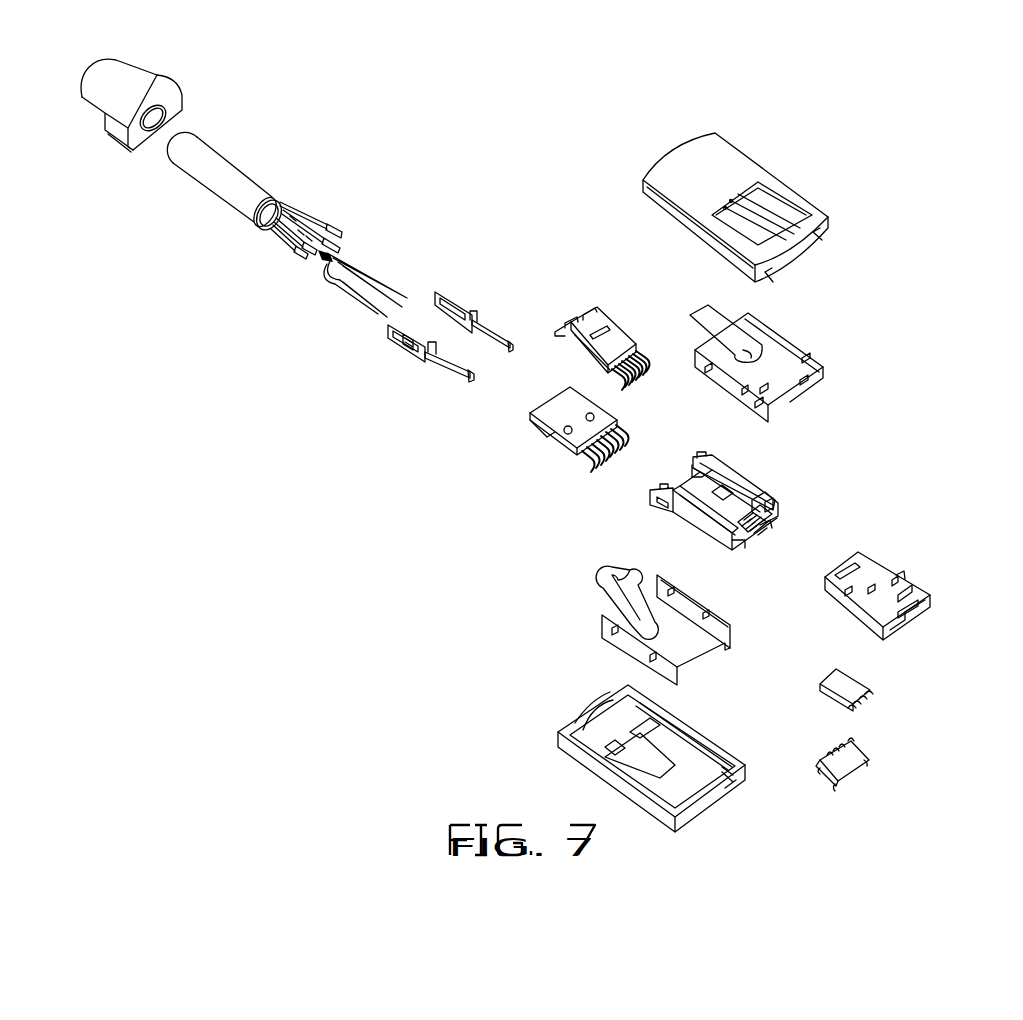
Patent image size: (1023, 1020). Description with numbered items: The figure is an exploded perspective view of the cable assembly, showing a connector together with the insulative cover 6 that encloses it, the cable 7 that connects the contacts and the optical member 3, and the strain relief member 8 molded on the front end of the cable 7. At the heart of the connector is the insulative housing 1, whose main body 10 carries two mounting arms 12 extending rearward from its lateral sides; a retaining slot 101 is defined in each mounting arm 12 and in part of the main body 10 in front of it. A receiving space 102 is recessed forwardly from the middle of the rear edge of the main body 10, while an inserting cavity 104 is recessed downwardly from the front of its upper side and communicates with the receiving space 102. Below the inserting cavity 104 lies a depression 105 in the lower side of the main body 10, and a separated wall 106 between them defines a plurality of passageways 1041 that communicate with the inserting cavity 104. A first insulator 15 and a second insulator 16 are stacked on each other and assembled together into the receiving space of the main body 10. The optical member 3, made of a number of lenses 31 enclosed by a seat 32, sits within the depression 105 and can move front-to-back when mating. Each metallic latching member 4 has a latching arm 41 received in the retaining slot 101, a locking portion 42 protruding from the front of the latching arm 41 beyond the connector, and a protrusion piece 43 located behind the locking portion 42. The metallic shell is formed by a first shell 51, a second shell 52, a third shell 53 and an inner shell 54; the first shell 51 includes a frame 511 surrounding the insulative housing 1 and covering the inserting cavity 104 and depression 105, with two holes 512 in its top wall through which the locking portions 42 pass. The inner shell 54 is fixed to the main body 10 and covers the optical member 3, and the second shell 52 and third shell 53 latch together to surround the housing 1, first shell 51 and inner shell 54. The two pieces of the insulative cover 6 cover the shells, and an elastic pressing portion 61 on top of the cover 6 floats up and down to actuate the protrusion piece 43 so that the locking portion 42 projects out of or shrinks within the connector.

The insulative housing 1 is at (720, 510).
The main body 10 is at (707, 527).
The retaining slot 101 is at (727, 477).
The receiving space 102 is at (680, 488).
The inserting cavity 104 is at (760, 518).
The passageways 1041 is at (753, 500).
The depression 105 is at (745, 537).
The separated wall 106 is at (762, 532).
The mounting arms 12 is at (670, 505).
The first insulator 15 is at (615, 333).
The second insulator 16 is at (560, 408).
The optical member 3 is at (849, 681).
The lenses 31 is at (840, 707).
The seat 32 is at (850, 677).
The latching member 4 is at (441, 369).
The latching arm 41 is at (437, 360).
The locking portion 42 is at (470, 382).
The protrusion piece 43 is at (407, 348).
The first shell 51 is at (914, 563).
The frame 511 is at (905, 595).
The holes 512 is at (903, 577).
The second shell 52 is at (805, 320).
The third shell 53 is at (572, 555).
The inner shell 54 is at (880, 732).
The insulative cover 6 is at (692, 482).
The elastic pressing portion 61 is at (785, 215).
The cable 7 is at (318, 182).
The strain relief member 8 is at (190, 70).